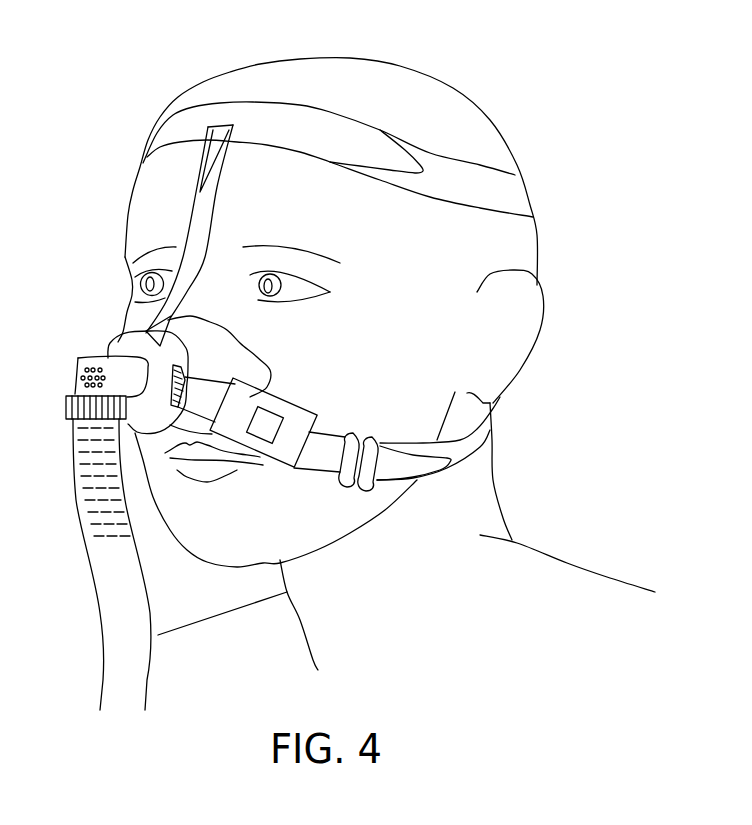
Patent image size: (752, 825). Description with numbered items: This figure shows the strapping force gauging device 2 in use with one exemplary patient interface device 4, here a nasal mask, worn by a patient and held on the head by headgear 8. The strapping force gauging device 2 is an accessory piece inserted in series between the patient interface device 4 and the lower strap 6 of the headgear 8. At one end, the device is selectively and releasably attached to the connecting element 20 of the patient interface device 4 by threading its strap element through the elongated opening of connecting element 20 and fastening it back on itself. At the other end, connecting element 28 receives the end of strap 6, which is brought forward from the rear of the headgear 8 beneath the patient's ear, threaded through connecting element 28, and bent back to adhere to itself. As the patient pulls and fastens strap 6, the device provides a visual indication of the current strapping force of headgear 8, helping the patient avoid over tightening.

The strapping force gauging device 2 is at (284, 392).
The patient interface device 4 is at (212, 316).
The strap 6 is at (420, 474).
The headgear 8 is at (384, 123).
The connecting element 20 is at (174, 352).
The connecting element 28 is at (374, 438).